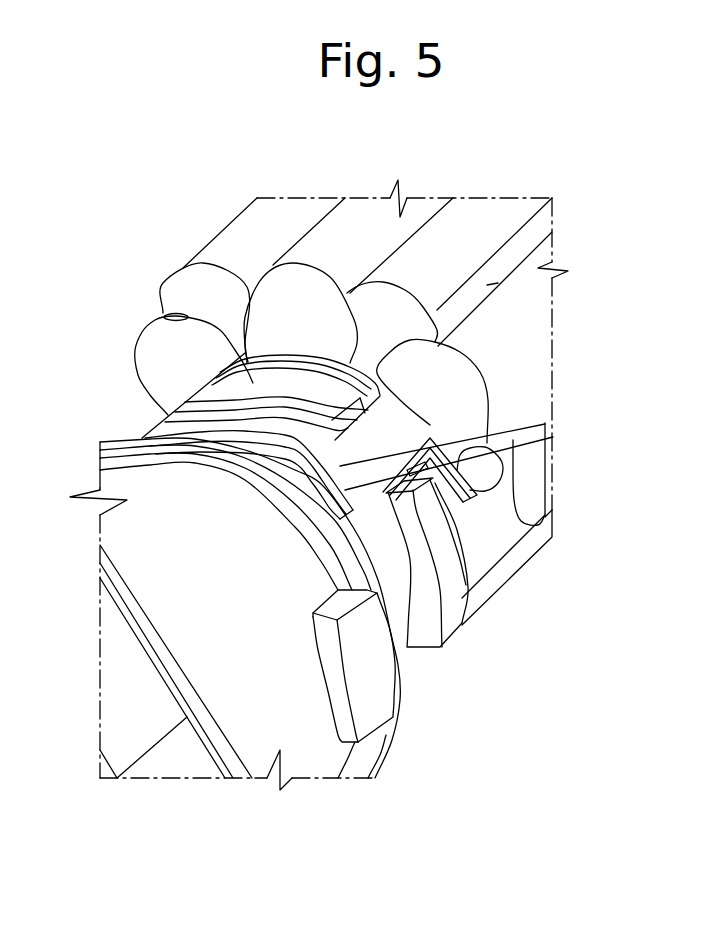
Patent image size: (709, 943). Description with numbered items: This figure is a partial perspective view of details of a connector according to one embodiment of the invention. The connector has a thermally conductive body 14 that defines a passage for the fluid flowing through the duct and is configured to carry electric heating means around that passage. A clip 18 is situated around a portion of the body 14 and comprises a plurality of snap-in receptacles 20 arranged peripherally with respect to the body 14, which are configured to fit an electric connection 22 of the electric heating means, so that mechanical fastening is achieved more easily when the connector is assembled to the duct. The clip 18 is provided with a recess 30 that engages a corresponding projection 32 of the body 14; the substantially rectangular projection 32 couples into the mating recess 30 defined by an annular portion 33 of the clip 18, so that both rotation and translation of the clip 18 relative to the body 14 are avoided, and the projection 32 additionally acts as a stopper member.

The thermally conductive body 14 is at (400, 703).
The clip 18 is at (457, 635).
The snap-in receptacles 20 is at (172, 318).
The electric connection 22 is at (160, 363).
The recess 30 is at (337, 383).
The projection 32 is at (253, 385).
The annular portion 33 is at (385, 447).